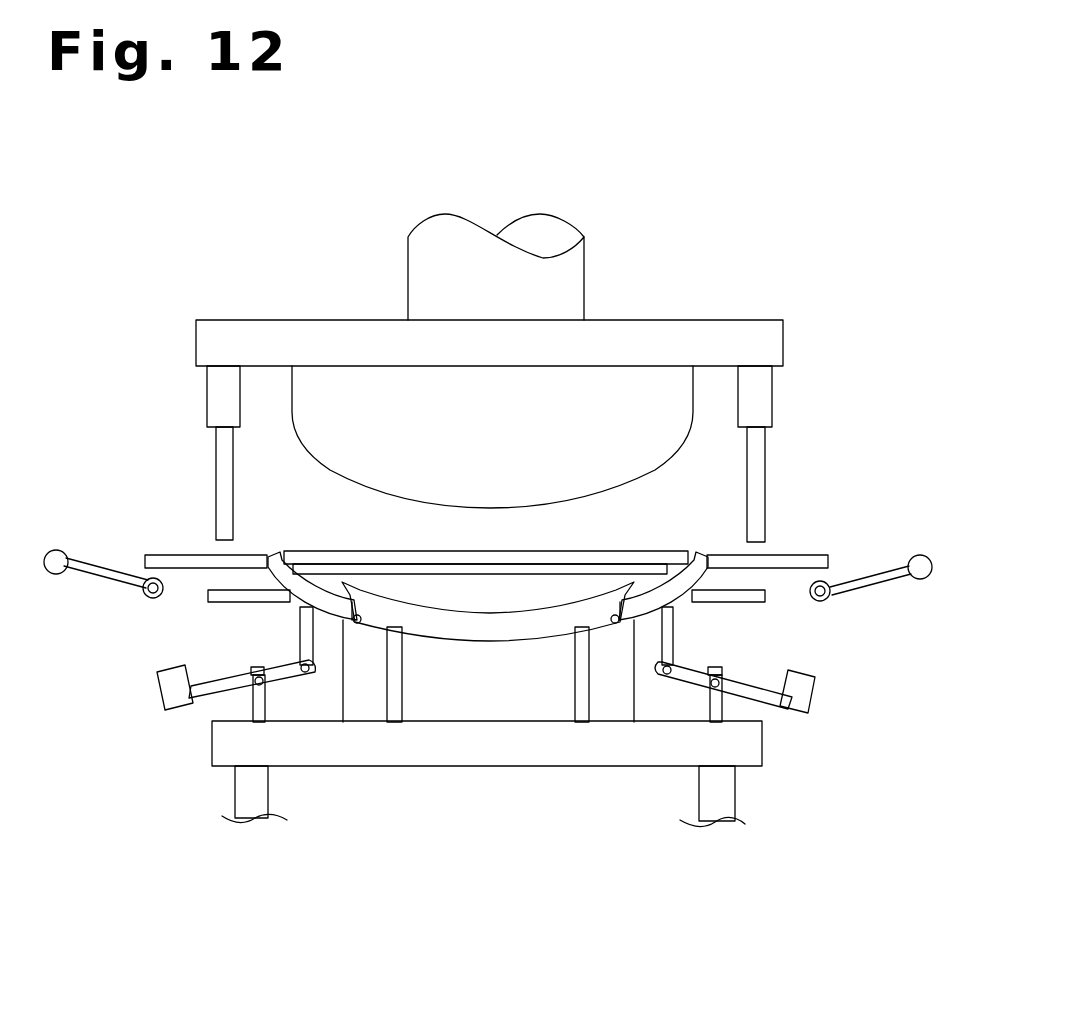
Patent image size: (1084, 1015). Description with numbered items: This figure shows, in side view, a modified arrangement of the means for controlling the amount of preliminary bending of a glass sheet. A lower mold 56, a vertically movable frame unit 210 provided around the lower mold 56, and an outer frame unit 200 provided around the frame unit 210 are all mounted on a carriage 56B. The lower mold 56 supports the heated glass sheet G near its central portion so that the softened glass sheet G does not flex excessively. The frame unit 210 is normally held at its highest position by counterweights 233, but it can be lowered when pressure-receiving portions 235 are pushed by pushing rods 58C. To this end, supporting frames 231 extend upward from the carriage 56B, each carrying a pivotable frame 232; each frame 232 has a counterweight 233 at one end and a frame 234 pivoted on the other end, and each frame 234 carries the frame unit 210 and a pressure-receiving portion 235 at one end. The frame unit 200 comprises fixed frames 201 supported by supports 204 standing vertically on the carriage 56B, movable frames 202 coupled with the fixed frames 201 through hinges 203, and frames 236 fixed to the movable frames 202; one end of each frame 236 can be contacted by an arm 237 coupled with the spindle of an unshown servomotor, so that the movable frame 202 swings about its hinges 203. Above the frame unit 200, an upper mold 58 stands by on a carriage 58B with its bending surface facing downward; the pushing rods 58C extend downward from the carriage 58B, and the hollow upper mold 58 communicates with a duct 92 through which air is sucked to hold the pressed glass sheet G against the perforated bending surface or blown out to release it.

The duct 92 is at (538, 213).
The carriage 58B is at (666, 320).
The pushing rods 58C is at (768, 458).
The upper mold 58 is at (655, 443).
The glass sheet G is at (348, 560).
The frame unit 210 is at (430, 578).
The frame unit 200 is at (850, 488).
The fixed frames 201 is at (538, 625).
The movable frames 202 is at (660, 590).
The hinges 203 is at (614, 614).
The supports 204 is at (580, 715).
The supporting frames 231 is at (720, 712).
The frame 232 is at (740, 684).
The counterweight 233 is at (805, 692).
The frame 234 is at (672, 633).
The pressure-receiving portions 235 is at (765, 608).
The frames 236 is at (787, 562).
The arm 237 is at (875, 575).
The lower mold 56 is at (470, 705).
The carriage 56B is at (765, 748).